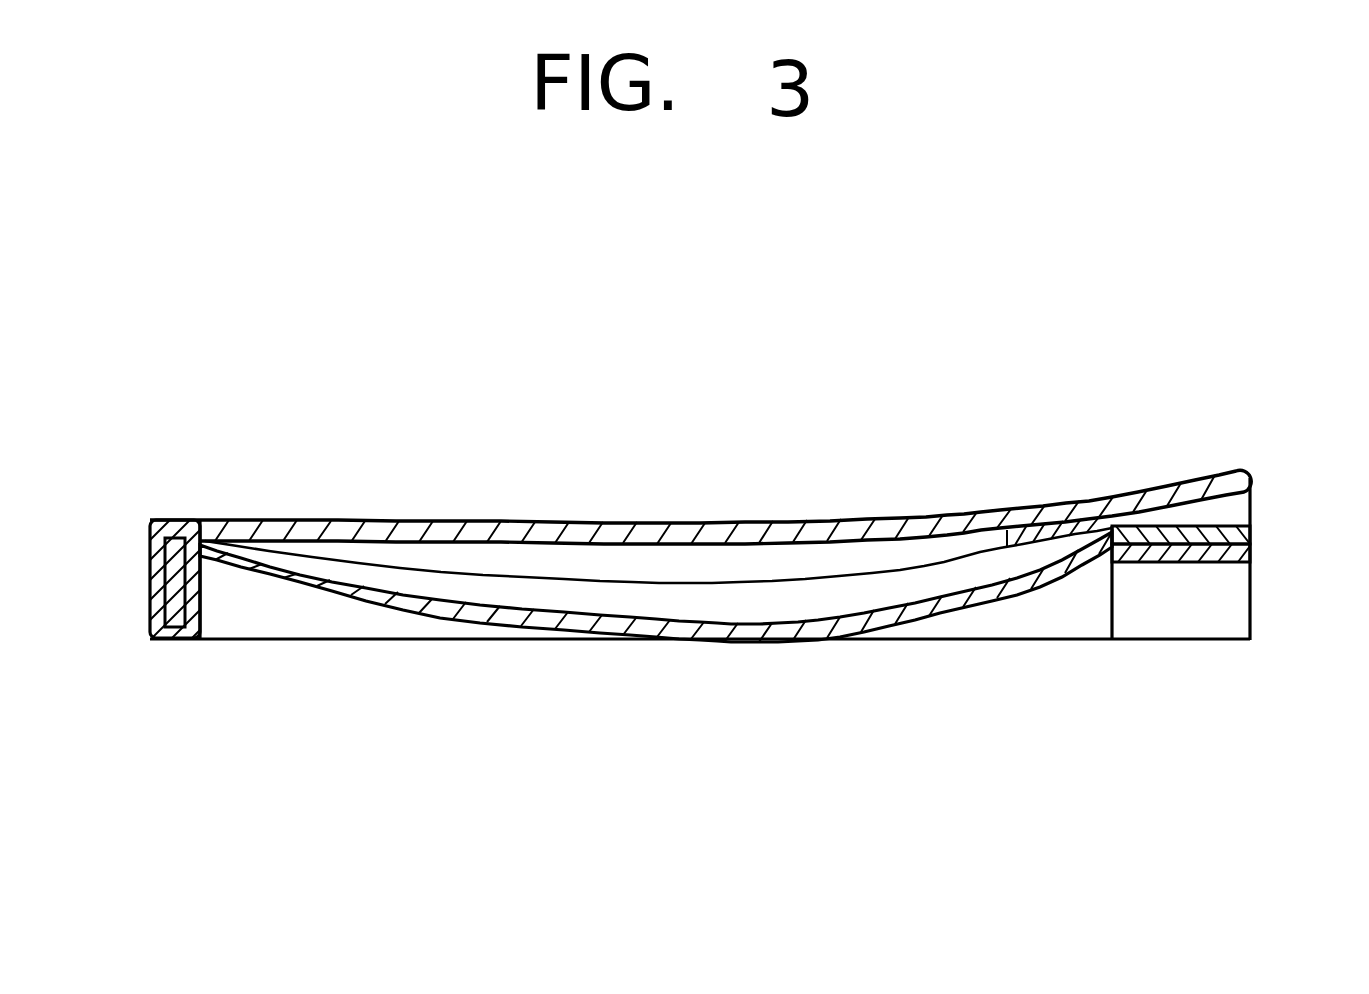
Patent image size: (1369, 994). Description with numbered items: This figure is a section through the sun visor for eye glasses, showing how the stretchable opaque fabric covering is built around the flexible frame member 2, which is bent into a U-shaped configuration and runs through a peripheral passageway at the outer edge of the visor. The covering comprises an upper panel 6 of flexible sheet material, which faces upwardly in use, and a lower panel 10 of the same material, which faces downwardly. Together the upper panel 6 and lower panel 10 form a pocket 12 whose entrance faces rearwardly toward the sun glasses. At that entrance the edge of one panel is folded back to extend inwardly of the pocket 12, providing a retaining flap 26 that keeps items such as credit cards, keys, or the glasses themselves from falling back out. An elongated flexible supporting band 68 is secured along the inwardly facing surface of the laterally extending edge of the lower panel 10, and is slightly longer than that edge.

The flexible frame member 2 is at (150, 600).
The upper panel 6 is at (1245, 470).
The lower panel 10 is at (1222, 553).
The pocket 12 is at (517, 565).
The retaining flap 26 is at (1007, 545).
The elongated flexible supporting band 68 is at (1253, 515).